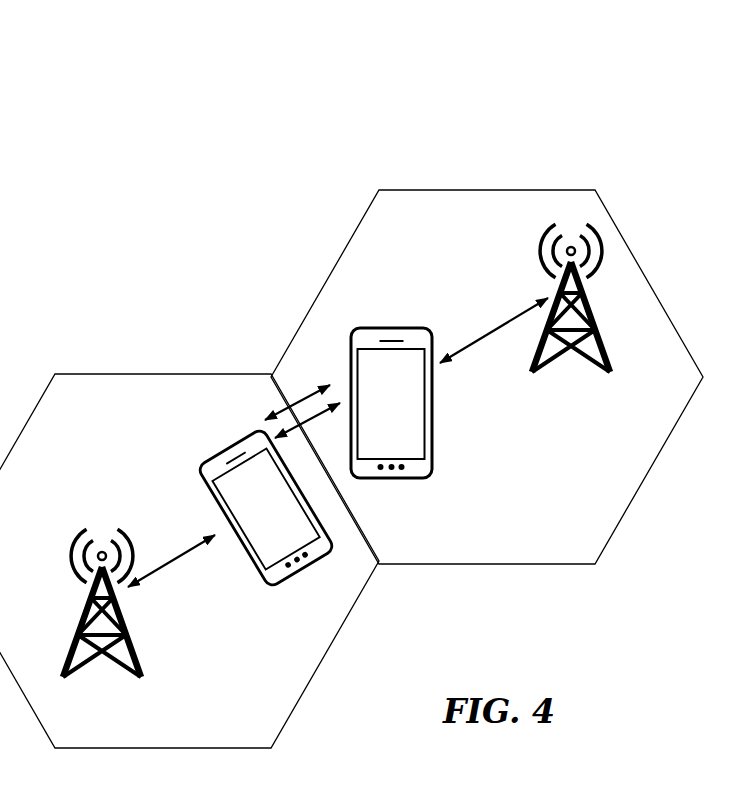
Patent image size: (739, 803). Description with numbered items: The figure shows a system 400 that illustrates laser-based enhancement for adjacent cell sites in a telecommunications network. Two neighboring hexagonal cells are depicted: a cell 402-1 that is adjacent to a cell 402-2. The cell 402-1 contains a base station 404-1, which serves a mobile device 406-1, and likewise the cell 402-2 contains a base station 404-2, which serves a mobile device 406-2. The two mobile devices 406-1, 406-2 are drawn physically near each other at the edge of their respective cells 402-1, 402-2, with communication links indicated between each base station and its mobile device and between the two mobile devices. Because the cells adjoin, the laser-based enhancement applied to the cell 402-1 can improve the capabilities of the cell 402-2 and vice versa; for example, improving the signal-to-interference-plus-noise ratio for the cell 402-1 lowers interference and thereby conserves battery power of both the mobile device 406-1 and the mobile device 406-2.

The system 400 is at (665, 90).
The cell 402-1 is at (192, 744).
The cell 402-2 is at (520, 557).
The base station 404-1 is at (84, 622).
The base station 404-2 is at (623, 312).
The mobile device 406-1 is at (200, 467).
The mobile device 406-2 is at (393, 328).